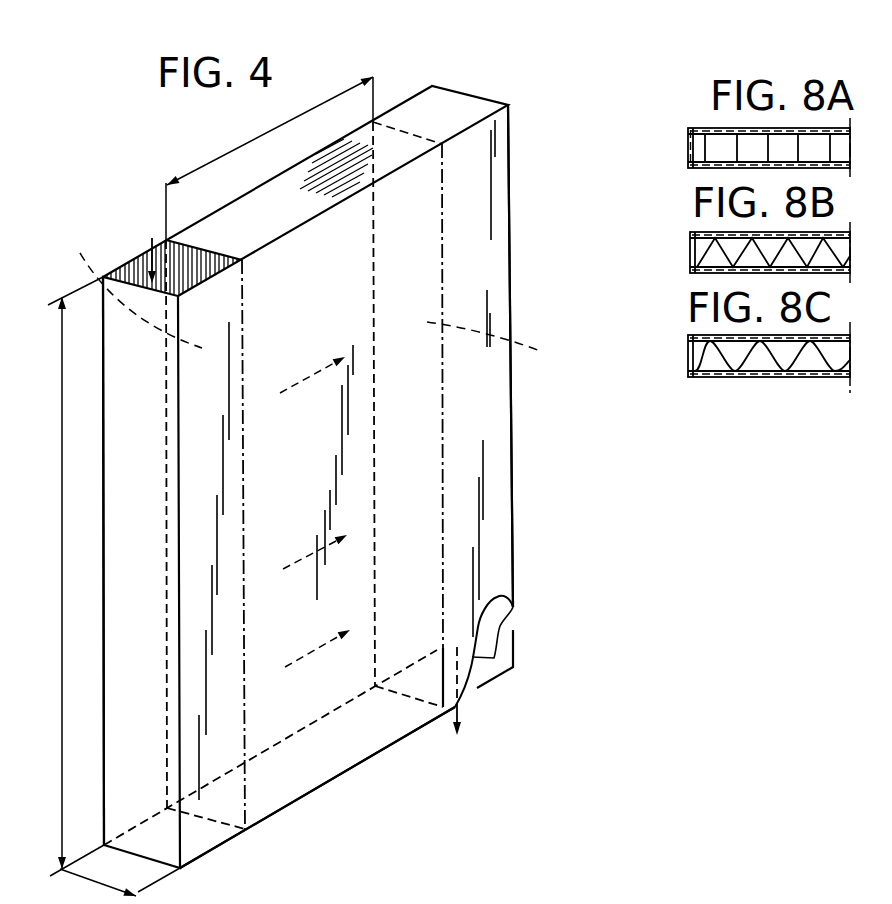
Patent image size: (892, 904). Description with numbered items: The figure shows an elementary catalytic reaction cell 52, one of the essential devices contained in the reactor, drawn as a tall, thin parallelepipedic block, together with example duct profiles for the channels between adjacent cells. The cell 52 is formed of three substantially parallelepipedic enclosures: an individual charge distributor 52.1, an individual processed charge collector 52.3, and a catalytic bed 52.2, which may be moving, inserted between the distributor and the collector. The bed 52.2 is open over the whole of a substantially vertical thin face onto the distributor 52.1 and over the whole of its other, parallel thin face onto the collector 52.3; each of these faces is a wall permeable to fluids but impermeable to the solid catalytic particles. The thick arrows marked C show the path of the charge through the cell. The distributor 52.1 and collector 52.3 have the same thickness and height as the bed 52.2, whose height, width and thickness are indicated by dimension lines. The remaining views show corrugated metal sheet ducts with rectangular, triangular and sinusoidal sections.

The elementary catalytic reaction cell 52 is at (526, 780).
The individual charge distributor 52.1 is at (197, 808).
The catalytic bed 52.2 is at (332, 742).
The individual processed charge collector 52.3 is at (500, 518).